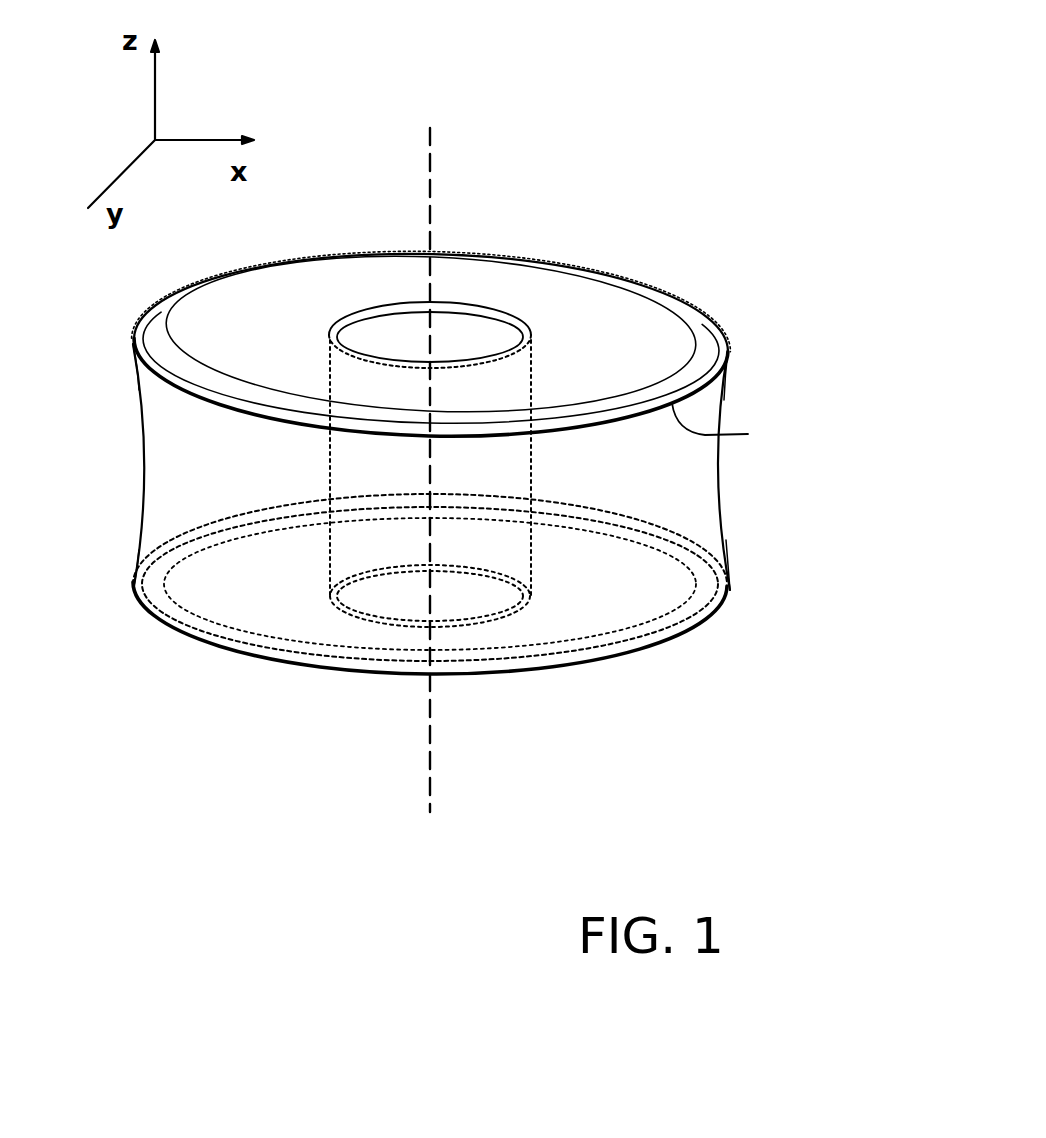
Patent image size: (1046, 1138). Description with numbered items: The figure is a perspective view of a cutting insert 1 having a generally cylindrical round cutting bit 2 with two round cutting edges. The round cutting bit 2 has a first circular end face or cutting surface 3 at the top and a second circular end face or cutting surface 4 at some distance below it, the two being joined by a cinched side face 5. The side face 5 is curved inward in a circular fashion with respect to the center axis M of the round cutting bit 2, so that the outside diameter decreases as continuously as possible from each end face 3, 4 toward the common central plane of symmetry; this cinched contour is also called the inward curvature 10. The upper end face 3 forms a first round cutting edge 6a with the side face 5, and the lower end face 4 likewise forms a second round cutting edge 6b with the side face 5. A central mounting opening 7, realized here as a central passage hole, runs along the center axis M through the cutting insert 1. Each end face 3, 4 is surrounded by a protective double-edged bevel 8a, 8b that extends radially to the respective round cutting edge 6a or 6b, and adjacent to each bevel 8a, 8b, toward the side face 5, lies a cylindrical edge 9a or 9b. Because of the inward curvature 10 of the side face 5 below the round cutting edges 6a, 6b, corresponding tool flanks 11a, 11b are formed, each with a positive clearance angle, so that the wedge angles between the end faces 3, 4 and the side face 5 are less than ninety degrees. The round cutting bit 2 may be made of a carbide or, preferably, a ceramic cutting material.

The cutting insert 1 is at (670, 190).
The round cutting bit 2 is at (263, 267).
The first circular end face 3 is at (538, 272).
The second circular end face 4 is at (258, 619).
The side face 5 is at (143, 468).
The first round cutting edge 6a is at (157, 373).
The second round cutting edge 6b is at (147, 606).
The central mounting opening 7 is at (385, 337).
The double-edged bevel 8a is at (702, 327).
The double-edged bevel 8b is at (702, 600).
The cylindrical edge 9a is at (734, 423).
The cylindrical edge 9b is at (591, 668).
The inward curvature 10 is at (730, 480).
The tool flank 11a is at (723, 403).
The tool flank 11b is at (725, 549).
The center axis M is at (462, 464).